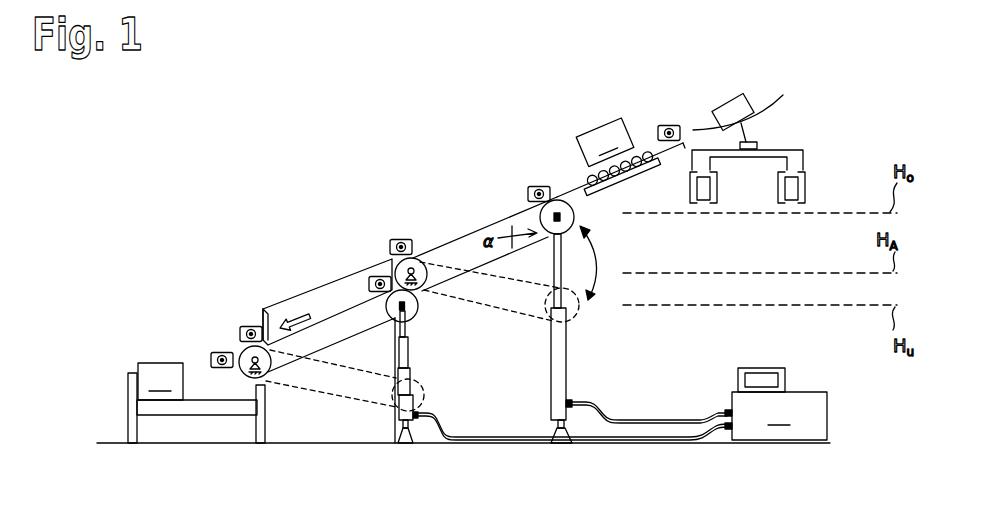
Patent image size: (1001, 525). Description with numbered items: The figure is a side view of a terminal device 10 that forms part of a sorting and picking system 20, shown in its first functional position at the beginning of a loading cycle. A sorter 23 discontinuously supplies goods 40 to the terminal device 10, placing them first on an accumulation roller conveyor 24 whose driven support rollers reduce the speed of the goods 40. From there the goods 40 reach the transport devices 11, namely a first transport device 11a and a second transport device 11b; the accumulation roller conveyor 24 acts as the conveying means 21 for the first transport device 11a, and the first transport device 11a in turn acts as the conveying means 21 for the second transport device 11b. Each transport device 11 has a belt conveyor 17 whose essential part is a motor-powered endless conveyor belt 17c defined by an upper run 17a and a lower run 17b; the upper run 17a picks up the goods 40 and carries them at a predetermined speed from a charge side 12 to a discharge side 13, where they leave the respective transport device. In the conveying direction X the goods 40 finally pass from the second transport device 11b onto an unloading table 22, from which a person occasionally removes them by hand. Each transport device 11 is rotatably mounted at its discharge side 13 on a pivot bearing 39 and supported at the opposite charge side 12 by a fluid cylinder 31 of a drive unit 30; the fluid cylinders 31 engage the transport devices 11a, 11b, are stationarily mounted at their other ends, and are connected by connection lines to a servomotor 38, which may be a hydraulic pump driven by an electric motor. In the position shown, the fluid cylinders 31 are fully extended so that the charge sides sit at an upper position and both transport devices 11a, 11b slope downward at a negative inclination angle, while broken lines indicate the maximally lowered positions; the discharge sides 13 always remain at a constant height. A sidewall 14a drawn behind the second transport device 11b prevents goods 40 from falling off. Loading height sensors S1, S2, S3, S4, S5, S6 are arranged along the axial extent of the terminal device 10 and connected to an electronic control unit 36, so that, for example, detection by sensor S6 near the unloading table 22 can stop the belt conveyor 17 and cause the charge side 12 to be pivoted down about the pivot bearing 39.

The terminal device 10 is at (292, 101).
The transport devices 11 is at (293, 287).
The first transport device 11a is at (505, 215).
The second transport device 11b is at (322, 288).
The charge side 12 is at (380, 276).
The discharge side 13 is at (410, 239).
The sidewall 14a is at (268, 418).
The belt conveyor 17 is at (503, 323).
The upper run 17a is at (268, 308).
The lower run 17b is at (322, 360).
The endless conveyor belt 17c is at (490, 232).
The sorting and picking system 20 is at (480, 83).
The conveying means 21 is at (589, 103).
The unloading table 22 is at (125, 385).
The sorter 23 is at (805, 121).
The accumulation roller conveyor 24 is at (645, 147).
The drive unit 30 is at (655, 453).
The fluid cylinder 31 is at (408, 378).
The electronic control unit 36 is at (774, 368).
The servomotor 38 is at (779, 416).
The pivot bearing 39 is at (242, 352).
The goods 40 is at (738, 102).
The loading height sensor S1 is at (669, 125).
The loading height sensor S2 is at (540, 186).
The loading height sensor S3 is at (396, 239).
The loading height sensor S4 is at (380, 276).
The loading height sensor S5 is at (245, 327).
The loading height sensor S6 is at (214, 355).
The conveying direction X is at (250, 348).